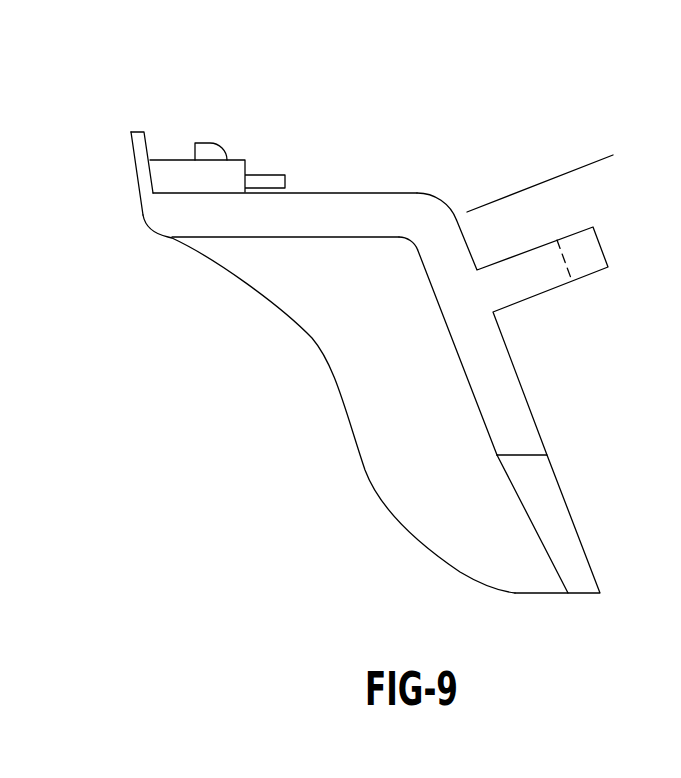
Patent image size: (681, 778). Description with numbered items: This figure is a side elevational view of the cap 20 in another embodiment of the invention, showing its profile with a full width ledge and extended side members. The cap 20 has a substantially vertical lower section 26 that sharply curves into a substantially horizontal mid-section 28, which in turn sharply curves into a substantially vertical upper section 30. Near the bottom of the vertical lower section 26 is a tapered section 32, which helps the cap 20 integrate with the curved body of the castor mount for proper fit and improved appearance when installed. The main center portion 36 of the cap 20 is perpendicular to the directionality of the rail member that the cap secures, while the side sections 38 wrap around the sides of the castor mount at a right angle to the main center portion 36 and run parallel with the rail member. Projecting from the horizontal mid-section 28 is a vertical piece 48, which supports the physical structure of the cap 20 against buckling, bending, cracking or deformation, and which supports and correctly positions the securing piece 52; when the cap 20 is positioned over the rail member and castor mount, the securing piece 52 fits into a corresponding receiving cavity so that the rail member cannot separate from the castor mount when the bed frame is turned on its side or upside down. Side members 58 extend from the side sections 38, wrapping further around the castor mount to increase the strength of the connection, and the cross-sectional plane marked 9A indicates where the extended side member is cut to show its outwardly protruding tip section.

The cap 20 is at (504, 125).
The vertical lower section 26 is at (512, 355).
The horizontal mid-section 28 is at (342, 193).
The vertical upper section 30 is at (141, 153).
The tapered section 32 is at (548, 520).
The main center portion 36 is at (353, 385).
The side sections 38 is at (421, 218).
The vertical piece 48 is at (232, 173).
The securing piece 52 is at (207, 152).
The side members 58 is at (580, 252).
The section line 9A- 9A is at (504, 241).